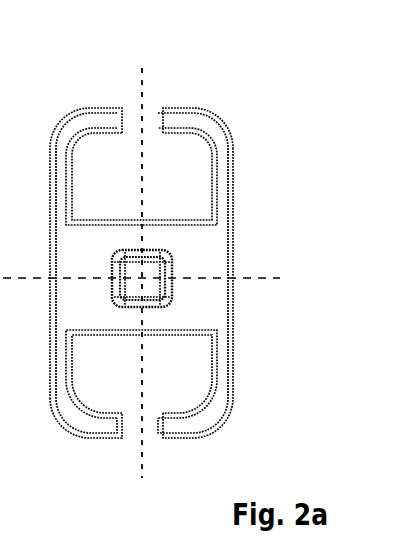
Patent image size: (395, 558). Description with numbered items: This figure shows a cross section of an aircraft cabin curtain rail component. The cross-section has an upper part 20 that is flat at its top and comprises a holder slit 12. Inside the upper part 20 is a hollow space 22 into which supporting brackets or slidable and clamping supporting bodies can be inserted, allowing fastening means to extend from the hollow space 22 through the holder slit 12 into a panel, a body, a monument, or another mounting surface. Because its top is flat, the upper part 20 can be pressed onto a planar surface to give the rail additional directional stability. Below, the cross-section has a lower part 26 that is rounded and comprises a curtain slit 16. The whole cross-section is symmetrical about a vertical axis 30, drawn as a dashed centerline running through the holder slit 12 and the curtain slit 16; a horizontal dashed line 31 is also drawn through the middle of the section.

The holder slit 12 is at (157, 88).
The curtain slit 16 is at (129, 452).
The upper part 20 is at (263, 110).
The hollow space 22 is at (200, 128).
The lower part 26 is at (263, 328).
The vertical axis 30 is at (143, 477).
The transverse center plane 31 is at (263, 281).